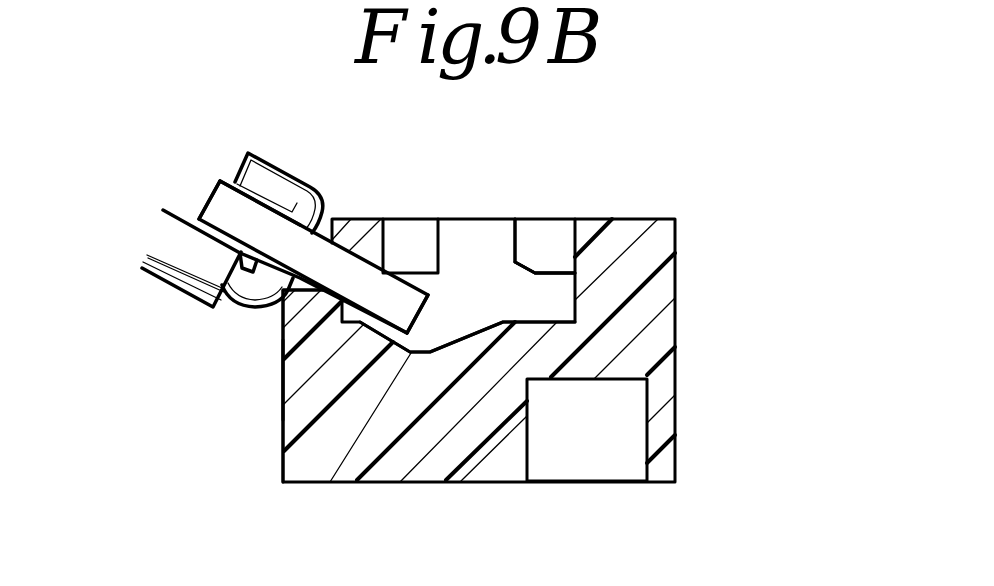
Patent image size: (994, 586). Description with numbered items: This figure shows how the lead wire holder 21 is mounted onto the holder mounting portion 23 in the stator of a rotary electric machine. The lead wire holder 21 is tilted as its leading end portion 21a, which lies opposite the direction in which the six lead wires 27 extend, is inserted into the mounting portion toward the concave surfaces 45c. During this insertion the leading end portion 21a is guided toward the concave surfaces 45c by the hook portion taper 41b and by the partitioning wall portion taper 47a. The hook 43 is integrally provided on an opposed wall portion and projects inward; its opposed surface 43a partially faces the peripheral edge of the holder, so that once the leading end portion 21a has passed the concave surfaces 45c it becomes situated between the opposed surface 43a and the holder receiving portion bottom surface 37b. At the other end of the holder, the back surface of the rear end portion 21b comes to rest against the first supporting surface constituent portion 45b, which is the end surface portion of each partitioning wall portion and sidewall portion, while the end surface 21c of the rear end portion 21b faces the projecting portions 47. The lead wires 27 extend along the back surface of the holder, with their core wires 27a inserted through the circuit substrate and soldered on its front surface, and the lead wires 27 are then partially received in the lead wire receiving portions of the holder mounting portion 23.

The lead wire holder 21 is at (297, 233).
The leading end portion 21a is at (430, 312).
The rear end portion 21b is at (251, 210).
The end surface 21c is at (208, 197).
The holder mounting portion 23 is at (683, 252).
The lead wire 27 is at (162, 277).
The core wire 27a is at (273, 170).
The holder receiving portion bottom surface 37b is at (550, 322).
The hook portion taper 41b is at (397, 287).
The hook 43 is at (552, 228).
The opposed surface 43a is at (575, 282).
The first supporting surface constituent portion 45b is at (352, 322).
The concave surface 45c is at (403, 346).
The projecting portion 47 is at (283, 327).
The partitioning wall portion taper 47a is at (345, 322).